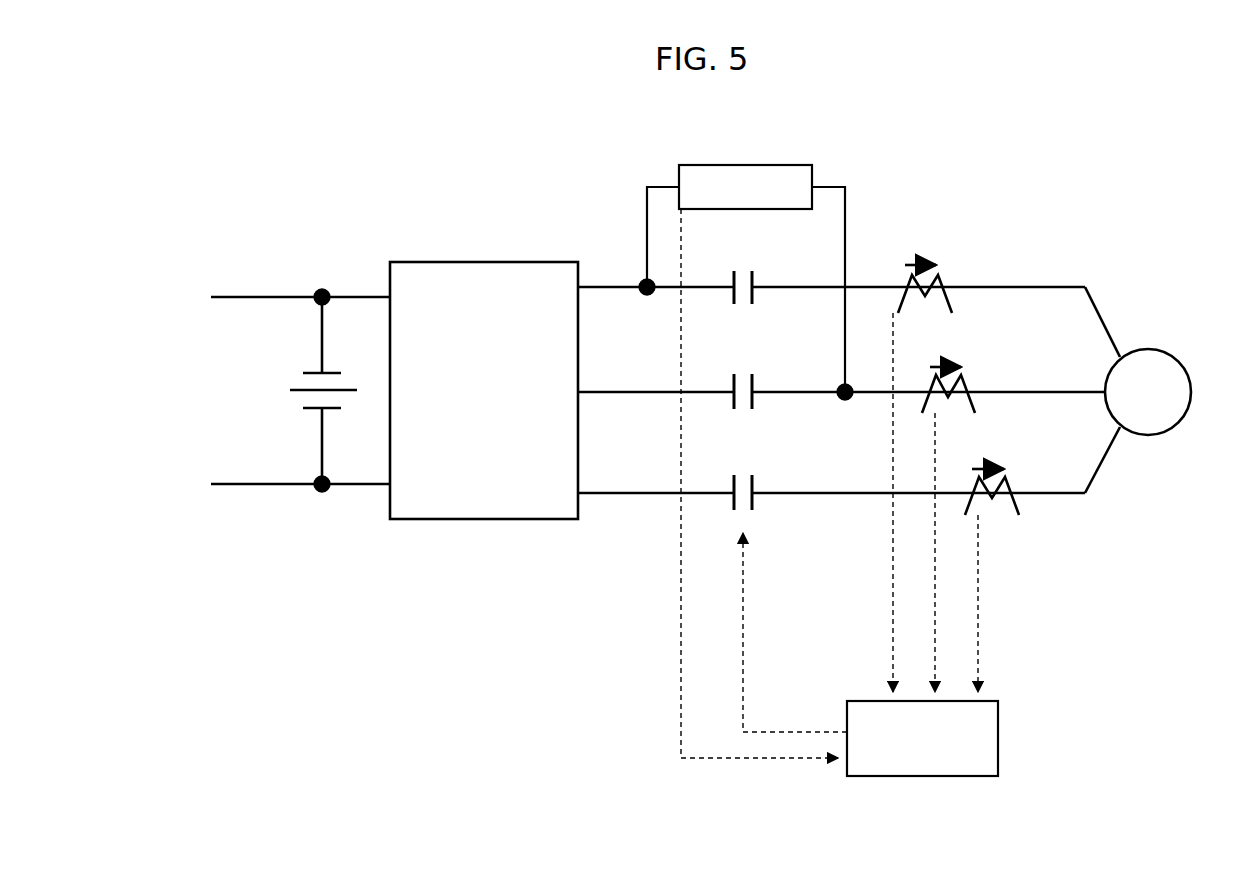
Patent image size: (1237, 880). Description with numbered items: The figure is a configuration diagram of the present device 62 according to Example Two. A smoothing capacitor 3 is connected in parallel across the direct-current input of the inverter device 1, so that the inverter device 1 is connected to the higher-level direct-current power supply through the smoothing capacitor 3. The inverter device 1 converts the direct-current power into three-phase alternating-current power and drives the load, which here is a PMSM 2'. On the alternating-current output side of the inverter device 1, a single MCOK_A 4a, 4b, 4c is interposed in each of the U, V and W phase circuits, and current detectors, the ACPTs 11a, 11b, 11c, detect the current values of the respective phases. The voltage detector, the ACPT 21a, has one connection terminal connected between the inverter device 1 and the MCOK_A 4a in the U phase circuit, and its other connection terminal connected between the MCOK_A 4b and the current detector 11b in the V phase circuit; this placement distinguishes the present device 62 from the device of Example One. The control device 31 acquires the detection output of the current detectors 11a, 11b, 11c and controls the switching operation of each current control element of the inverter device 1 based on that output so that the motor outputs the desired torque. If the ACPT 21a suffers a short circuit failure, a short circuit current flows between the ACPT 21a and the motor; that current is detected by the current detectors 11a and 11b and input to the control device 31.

The present device 62 is at (701, 456).
The smoothing capacitor 3 is at (276, 388).
The inverter device 1 is at (484, 390).
The MCOK_A 4a is at (753, 300).
The MCOK_A 4b is at (753, 404).
The MCOK_A 4c is at (753, 505).
The ACPT 21a is at (746, 282).
The ACPT 11a is at (948, 280).
The ACPT 11b is at (972, 382).
The ACPT 11c is at (1014, 483).
The PMSM 2' is at (1148, 392).
The control device 31 is at (922, 738).